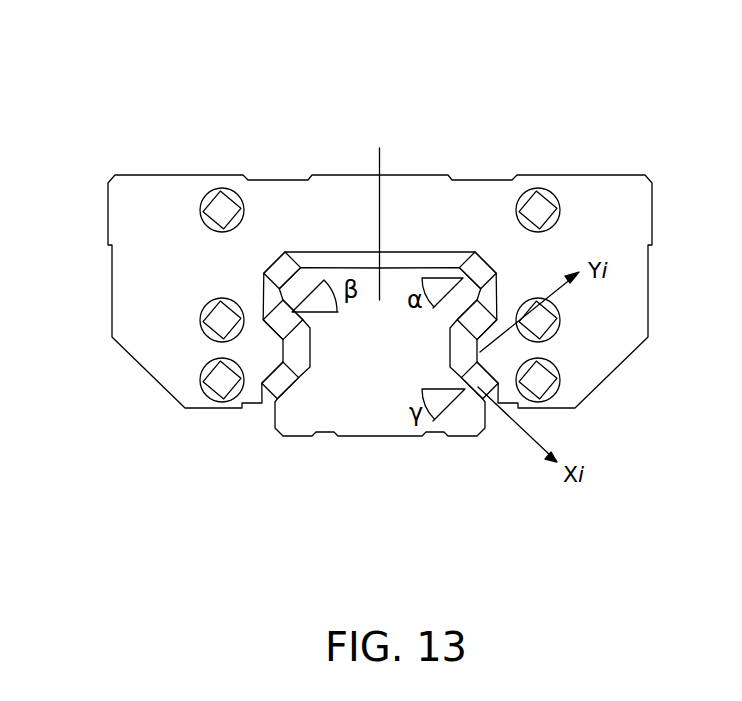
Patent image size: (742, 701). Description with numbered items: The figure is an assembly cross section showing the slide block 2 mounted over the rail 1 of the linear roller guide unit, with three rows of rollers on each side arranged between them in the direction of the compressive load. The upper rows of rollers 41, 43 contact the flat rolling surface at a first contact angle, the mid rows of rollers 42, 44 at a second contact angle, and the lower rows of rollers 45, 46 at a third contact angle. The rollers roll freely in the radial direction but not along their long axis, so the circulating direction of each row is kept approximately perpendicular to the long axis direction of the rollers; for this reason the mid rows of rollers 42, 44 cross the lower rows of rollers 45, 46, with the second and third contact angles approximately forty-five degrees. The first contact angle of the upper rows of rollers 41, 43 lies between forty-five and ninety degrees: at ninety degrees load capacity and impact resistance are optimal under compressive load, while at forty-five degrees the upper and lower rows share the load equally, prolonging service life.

The rail 1 is at (360, 417).
The slide block 2 is at (328, 202).
The roller of upper row 41 is at (480, 265).
The roller of mid row 42 is at (480, 323).
The roller of upper row 43 is at (280, 265).
The roller of mid row 44 is at (280, 323).
The roller of lower row 45 is at (482, 397).
The roller of lower row 46 is at (278, 387).